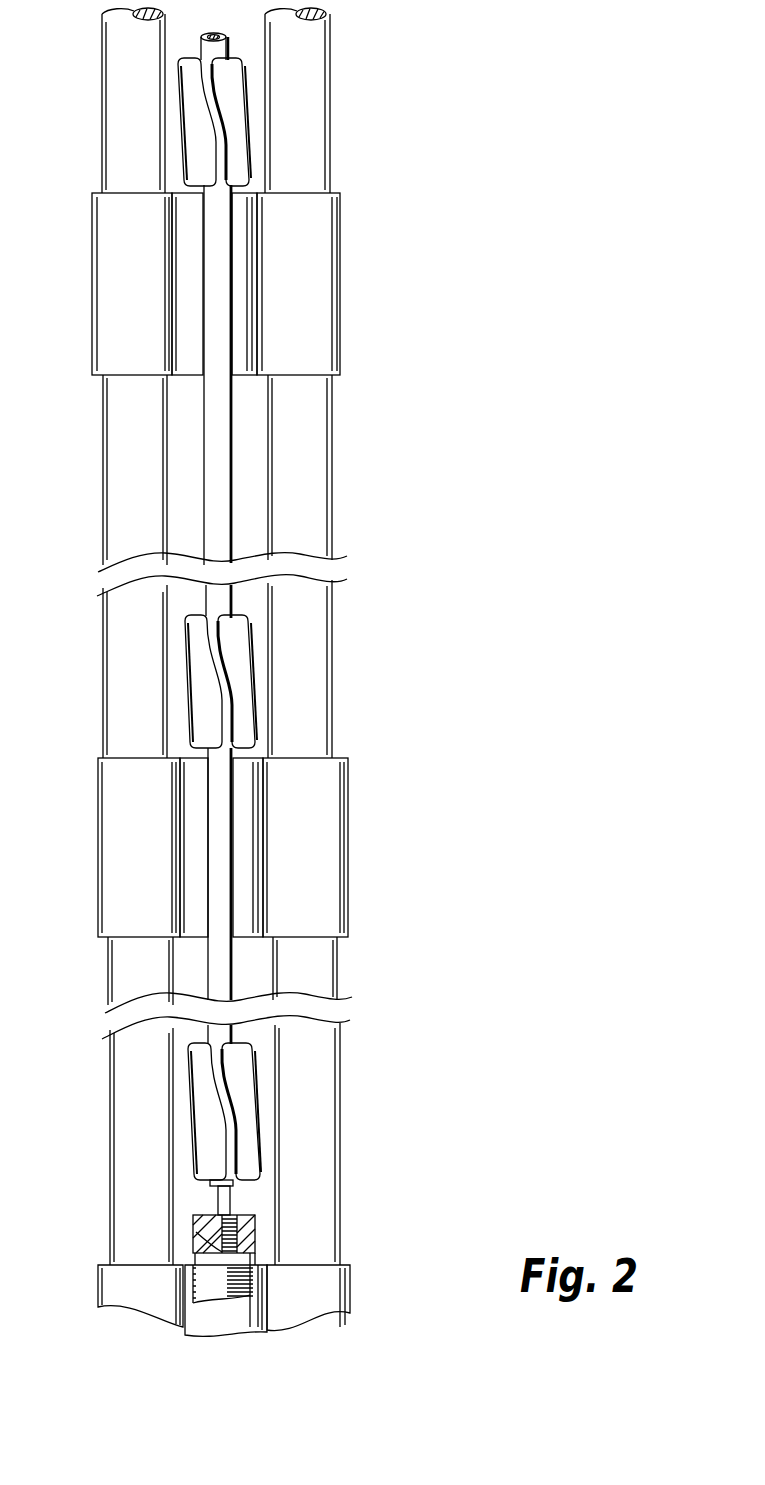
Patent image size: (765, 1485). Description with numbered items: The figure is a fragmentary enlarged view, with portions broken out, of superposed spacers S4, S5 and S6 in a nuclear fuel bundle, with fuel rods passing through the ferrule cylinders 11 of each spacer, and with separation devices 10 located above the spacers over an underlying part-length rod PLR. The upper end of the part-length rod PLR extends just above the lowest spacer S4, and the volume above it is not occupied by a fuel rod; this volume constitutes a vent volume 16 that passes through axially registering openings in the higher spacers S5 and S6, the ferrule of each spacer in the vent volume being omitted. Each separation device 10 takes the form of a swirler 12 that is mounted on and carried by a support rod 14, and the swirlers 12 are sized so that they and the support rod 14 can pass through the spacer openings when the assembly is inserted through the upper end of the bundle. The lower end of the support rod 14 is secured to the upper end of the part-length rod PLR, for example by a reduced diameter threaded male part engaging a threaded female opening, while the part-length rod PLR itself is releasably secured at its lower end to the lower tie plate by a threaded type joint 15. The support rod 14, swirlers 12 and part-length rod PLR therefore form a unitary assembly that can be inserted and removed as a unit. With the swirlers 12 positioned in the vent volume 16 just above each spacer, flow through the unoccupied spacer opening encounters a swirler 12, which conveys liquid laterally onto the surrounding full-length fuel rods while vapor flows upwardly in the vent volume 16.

The separation device 10 is at (198, 690).
The cylinders 11 is at (115, 838).
The swirlers 12 is at (192, 82).
The support rod 14 is at (227, 40).
The threaded type joint 15 is at (238, 1213).
The vent volume 16 is at (247, 127).
The part-length rod PLR is at (200, 1222).
The spacer S4 is at (343, 1260).
The spacer S5 is at (347, 842).
The spacer S6 is at (340, 262).